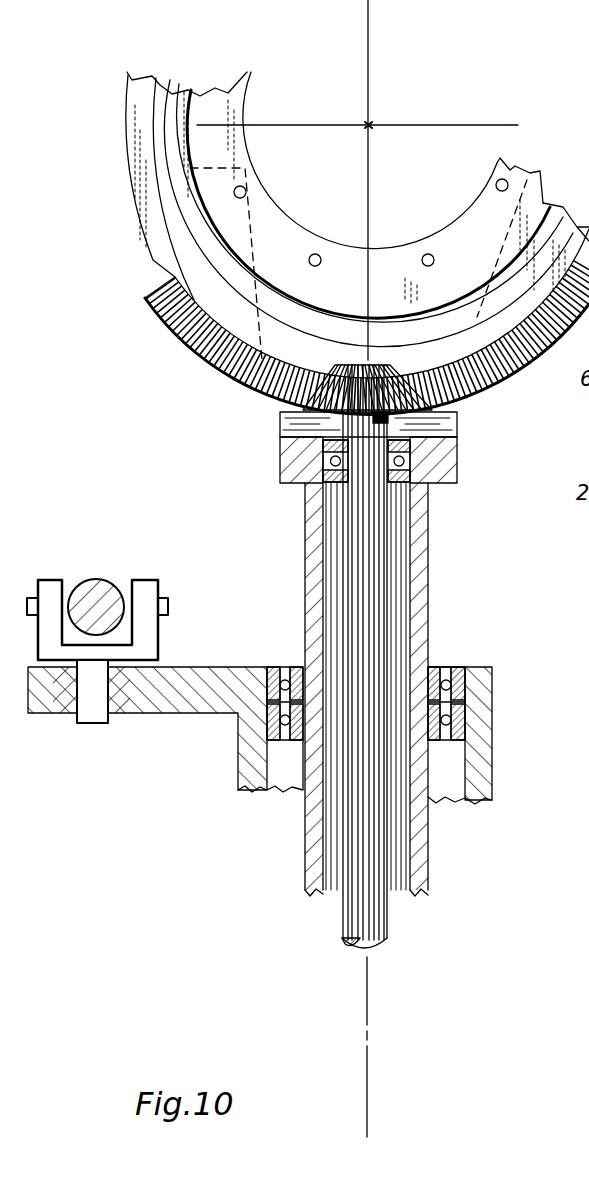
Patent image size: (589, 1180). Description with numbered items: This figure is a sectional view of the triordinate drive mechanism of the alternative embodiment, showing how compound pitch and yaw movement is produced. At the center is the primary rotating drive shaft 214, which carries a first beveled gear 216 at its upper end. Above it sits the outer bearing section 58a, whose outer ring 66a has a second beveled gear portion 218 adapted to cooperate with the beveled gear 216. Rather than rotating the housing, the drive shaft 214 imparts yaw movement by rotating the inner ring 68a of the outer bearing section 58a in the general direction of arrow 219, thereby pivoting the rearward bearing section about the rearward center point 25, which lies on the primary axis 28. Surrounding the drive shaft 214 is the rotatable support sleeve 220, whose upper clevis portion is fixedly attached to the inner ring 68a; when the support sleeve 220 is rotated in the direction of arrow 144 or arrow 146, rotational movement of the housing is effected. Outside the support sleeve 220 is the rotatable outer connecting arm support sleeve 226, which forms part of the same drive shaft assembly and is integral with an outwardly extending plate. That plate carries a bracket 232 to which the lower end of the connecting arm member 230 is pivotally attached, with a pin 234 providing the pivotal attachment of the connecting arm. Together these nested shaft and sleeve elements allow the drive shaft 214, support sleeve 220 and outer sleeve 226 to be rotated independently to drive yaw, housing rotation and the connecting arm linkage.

The rearward center point 25 is at (372, 128).
The primary axis 28 is at (367, 1110).
The outer bearing section 58a is at (119, 160).
The outer ring 66a is at (177, 268).
The inner ring 68a is at (257, 223).
The arrow 144 is at (390, 973).
The arrow 146 is at (337, 1005).
The primary rotating drive shaft 214 is at (358, 634).
The first beveled gear 216 is at (300, 412).
The second beveled gear portion 218 is at (490, 380).
The arrow 219 is at (81, 200).
The rotatable support sleeve 220 is at (418, 586).
The rotatable outer connecting arm support sleeve 226 is at (170, 703).
The connecting arm member 230 is at (92, 582).
The bracket 232 is at (143, 637).
The pin 234 is at (165, 601).